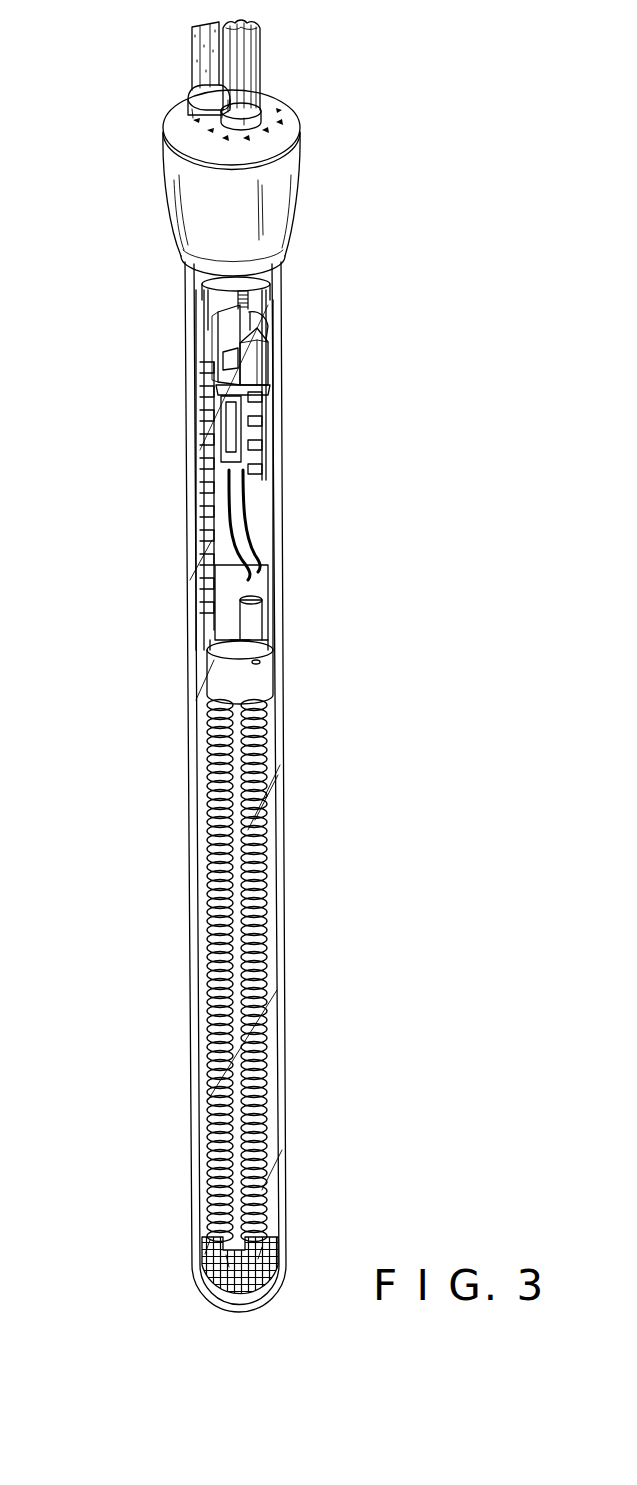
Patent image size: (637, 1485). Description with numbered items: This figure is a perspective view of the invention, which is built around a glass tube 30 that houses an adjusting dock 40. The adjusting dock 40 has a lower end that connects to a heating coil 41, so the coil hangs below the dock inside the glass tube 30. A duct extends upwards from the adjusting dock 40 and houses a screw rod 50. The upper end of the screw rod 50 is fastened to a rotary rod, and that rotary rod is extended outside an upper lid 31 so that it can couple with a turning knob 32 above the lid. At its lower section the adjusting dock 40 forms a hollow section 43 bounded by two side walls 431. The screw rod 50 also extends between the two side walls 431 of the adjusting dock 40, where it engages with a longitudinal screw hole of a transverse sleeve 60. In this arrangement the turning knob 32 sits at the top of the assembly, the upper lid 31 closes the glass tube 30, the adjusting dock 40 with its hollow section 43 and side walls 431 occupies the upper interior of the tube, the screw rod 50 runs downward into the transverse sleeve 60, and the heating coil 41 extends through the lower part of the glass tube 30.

The glass tube 30 is at (281, 678).
The upper lid 31 is at (170, 118).
The turning knob 32 is at (247, 27).
The adjusting dock 40 is at (207, 470).
The heating coil 41 is at (220, 785).
The hollow section 43 is at (258, 367).
The side walls 431 is at (225, 337).
The screw rod 50 is at (238, 297).
The transverse sleeve 60 is at (252, 318).